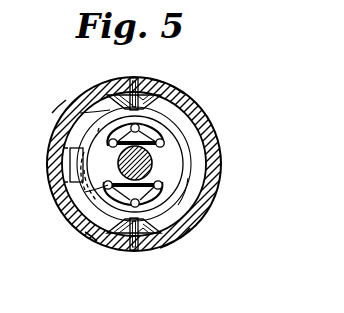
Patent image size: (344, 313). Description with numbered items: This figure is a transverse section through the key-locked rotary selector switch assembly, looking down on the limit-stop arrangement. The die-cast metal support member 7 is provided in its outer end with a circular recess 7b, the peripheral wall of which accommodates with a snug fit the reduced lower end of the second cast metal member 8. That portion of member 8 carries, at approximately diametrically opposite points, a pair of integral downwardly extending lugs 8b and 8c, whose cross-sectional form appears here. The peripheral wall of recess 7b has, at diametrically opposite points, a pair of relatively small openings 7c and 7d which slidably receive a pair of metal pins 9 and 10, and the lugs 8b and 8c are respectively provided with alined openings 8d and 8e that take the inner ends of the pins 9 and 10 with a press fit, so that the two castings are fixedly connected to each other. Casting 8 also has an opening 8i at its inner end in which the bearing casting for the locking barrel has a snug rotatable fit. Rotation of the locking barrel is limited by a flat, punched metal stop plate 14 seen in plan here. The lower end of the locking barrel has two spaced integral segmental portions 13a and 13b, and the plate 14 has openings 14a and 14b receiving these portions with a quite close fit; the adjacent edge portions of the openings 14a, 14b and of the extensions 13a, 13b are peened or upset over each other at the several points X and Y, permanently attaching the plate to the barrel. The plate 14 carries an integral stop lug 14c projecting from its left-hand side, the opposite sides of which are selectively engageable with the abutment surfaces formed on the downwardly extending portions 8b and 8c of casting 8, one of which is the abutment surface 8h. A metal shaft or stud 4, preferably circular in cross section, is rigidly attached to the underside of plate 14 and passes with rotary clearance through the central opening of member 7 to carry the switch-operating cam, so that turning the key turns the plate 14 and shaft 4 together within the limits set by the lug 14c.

The shaft 4 is at (150, 163).
The support member 7 is at (193, 124).
The circular recess 7b is at (200, 192).
The opening 7c is at (124, 86).
The opening 7d is at (123, 251).
The cast metal member 8 is at (207, 209).
The lug 8b is at (160, 86).
The lug 8c is at (164, 251).
The alined opening 8d is at (171, 96).
The alined opening 8e is at (187, 242).
The abutment surface 8h is at (96, 238).
The opening 8i is at (100, 112).
The metal pin 9 is at (138, 80).
The metal pin 10 is at (136, 254).
The segmental portion 13a is at (165, 134).
The segmental portion 13b is at (182, 218).
The stop plate 14 is at (172, 174).
The opening 14a is at (168, 116).
The opening 14b is at (86, 220).
The stop lug 14c is at (66, 152).
The peened point X is at (80, 113).
The peened point Y is at (85, 192).